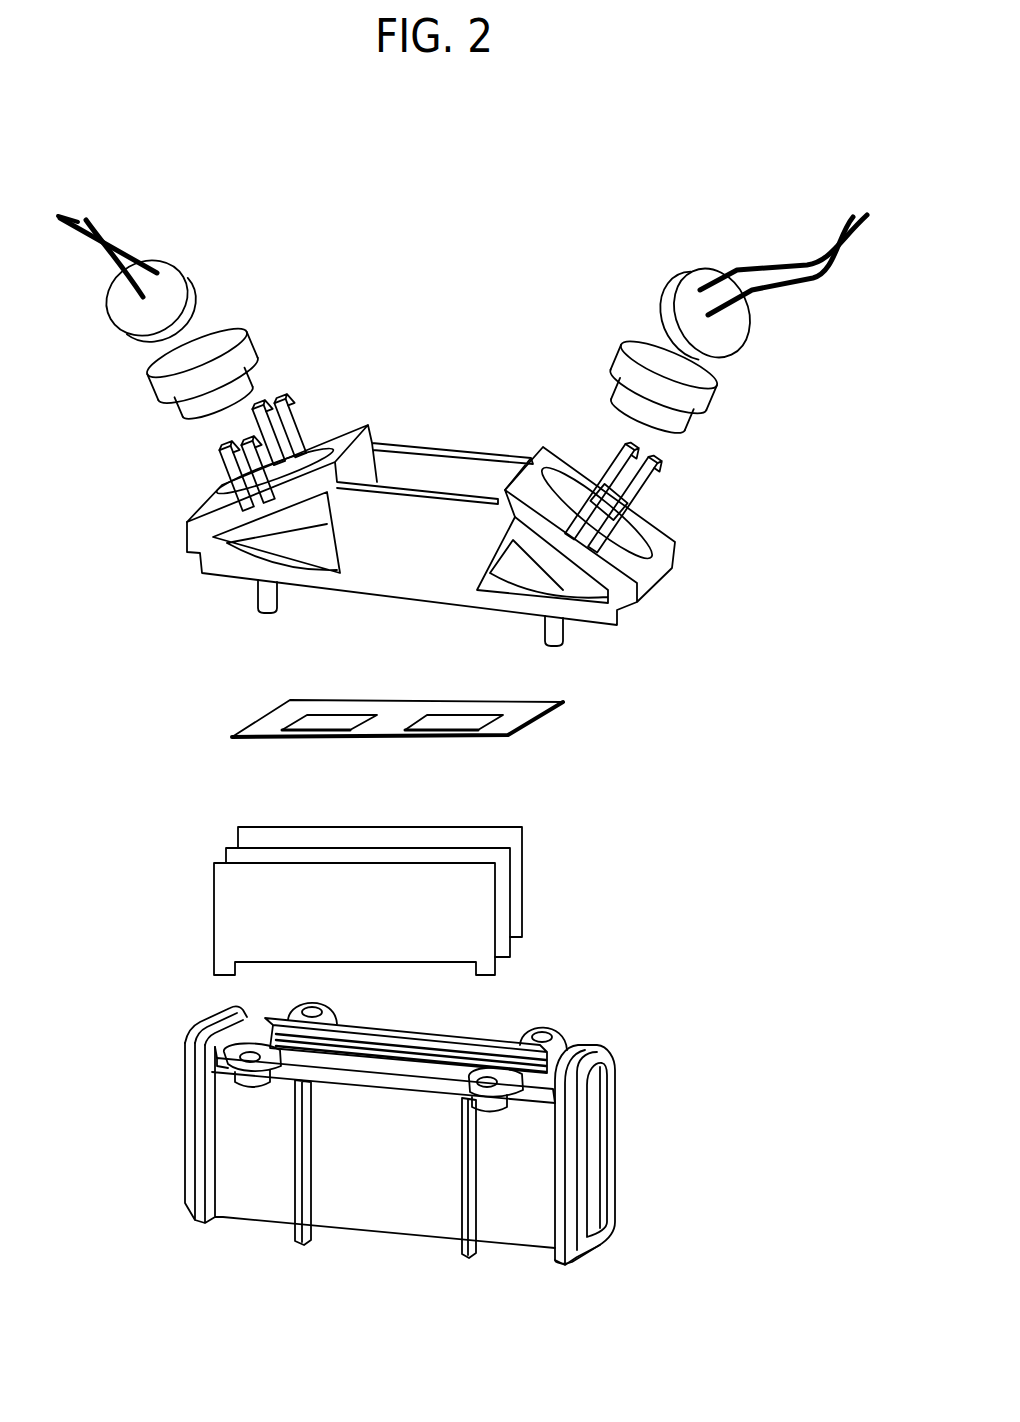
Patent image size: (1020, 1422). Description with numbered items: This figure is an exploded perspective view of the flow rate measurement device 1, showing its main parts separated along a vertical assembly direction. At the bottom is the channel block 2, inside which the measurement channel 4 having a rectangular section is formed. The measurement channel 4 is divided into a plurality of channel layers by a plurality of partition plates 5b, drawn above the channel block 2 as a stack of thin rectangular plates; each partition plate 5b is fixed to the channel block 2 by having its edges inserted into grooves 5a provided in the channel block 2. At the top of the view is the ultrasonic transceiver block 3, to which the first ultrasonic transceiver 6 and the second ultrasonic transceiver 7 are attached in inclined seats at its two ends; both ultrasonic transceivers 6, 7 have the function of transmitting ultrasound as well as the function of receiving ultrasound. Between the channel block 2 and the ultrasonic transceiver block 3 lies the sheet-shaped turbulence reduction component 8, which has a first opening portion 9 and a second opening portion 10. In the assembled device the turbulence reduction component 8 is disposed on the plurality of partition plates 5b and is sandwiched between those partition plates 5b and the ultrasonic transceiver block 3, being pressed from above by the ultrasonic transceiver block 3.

The flow rate measurement device 1 is at (545, 190).
The channel block 2 is at (695, 842).
The ultrasonic transceiver block 3 is at (443, 448).
The measurement channel 4 is at (602, 1162).
The grooves 5a is at (563, 1037).
The partition plates 5b is at (497, 933).
The first ultrasonic transceiver 6 is at (178, 280).
The second ultrasonic transceiver 7 is at (748, 326).
The turbulence reduction component 8 is at (260, 722).
The first opening portion 9 is at (332, 718).
The second opening portion 10 is at (468, 720).